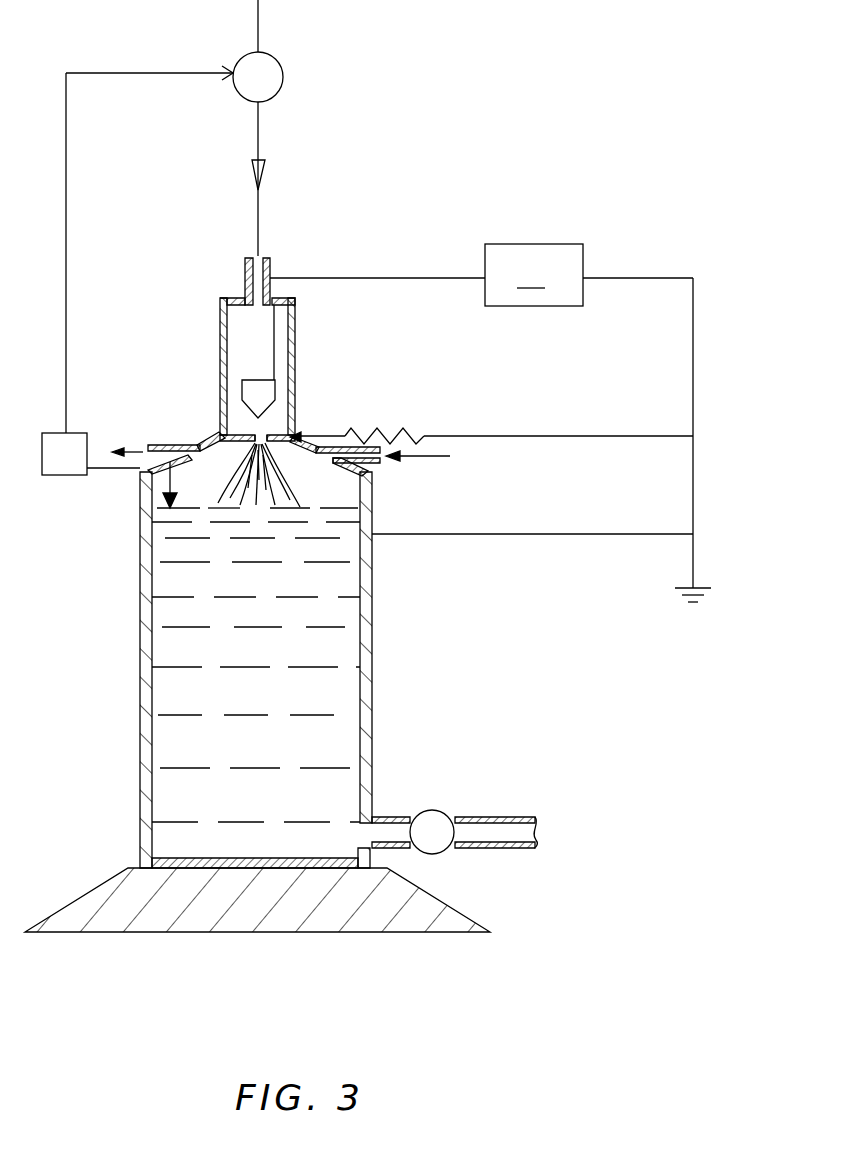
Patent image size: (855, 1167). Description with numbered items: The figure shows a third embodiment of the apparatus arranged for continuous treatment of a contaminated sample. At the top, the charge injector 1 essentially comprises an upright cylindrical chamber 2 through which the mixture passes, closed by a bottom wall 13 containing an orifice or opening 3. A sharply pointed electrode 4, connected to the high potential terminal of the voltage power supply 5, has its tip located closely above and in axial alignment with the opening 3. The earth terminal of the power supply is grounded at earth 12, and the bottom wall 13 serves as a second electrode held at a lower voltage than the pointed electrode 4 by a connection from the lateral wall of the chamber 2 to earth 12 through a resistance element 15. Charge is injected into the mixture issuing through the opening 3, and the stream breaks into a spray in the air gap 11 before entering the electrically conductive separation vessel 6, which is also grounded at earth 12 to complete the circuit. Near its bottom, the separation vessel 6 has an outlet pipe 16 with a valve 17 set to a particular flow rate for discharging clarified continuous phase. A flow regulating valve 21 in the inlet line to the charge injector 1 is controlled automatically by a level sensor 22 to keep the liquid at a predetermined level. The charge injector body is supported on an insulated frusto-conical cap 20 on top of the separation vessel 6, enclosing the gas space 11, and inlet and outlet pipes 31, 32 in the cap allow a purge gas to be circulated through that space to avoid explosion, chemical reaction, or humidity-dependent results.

The charge injector 1 is at (222, 352).
The chamber 2 is at (296, 415).
The orifice or opening 3 is at (254, 442).
The pointed electrode 4 is at (255, 395).
The voltage power supply 5 is at (589, 416).
The separation vessel 6 is at (363, 702).
The air gap 11 is at (237, 493).
The earth 12 is at (700, 585).
The bottom wall 13 is at (285, 444).
The resistance element 15 is at (491, 423).
The outlet pipe 16 is at (492, 849).
The valve 17 is at (437, 810).
The frusto-conical cap 20 is at (208, 441).
The flow regulating valve 21 is at (277, 58).
The level sensor 22 is at (57, 467).
The inlet pipe 31 is at (374, 466).
The outlet pipe 32 is at (163, 445).